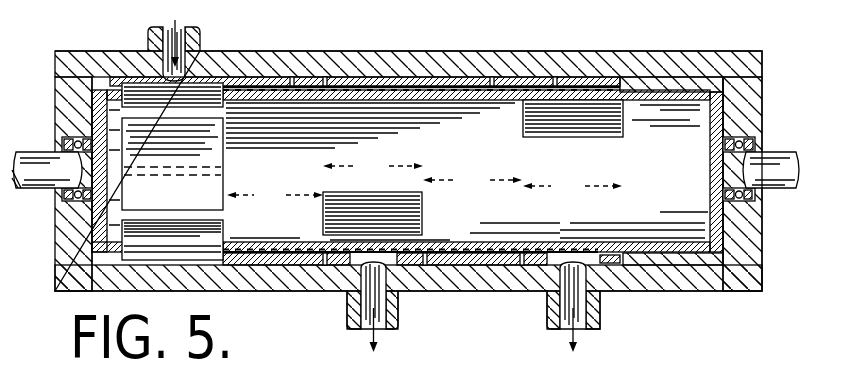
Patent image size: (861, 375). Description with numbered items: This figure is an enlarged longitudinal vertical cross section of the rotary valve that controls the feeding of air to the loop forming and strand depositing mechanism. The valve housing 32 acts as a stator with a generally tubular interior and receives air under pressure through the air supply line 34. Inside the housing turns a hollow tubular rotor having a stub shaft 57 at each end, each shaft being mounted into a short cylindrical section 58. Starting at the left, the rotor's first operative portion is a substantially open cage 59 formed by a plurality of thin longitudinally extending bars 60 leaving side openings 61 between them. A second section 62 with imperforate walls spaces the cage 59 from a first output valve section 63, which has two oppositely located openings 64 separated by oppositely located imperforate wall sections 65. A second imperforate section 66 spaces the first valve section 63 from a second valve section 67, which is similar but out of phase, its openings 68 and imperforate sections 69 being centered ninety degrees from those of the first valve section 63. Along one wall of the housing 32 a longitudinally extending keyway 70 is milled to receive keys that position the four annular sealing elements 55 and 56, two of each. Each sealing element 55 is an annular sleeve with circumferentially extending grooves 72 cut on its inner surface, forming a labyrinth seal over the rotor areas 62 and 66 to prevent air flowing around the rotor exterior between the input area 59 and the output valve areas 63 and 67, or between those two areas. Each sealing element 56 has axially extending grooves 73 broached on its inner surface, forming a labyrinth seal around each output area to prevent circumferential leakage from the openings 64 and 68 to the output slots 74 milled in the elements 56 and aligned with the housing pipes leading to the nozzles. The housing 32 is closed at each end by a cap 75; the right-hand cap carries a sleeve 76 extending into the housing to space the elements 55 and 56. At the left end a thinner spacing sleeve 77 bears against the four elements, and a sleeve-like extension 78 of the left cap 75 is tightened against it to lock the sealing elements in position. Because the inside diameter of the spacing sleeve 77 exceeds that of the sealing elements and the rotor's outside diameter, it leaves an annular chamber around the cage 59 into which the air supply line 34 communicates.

The valve housing 32 is at (573, 46).
The air supply line 34 is at (200, 44).
The annular sealing element 55 is at (276, 272).
The annular sealing element 56 is at (598, 70).
The stub shaft 57 is at (24, 151).
The short cylindrical section 58 is at (99, 70).
The cage 59 is at (133, 195).
The bar 60 is at (172, 118).
The side opening 61 is at (181, 244).
The second section 62 is at (275, 195).
The first output valve section 63 is at (373, 166).
The opening 64 is at (421, 208).
The imperforate wall section 65 is at (427, 88).
The second imperforate section 66 is at (472, 180).
The second valve section 67 is at (572, 186).
The opening 68 is at (622, 110).
The imperforate section 69 is at (602, 207).
The keyway 70 is at (216, 170).
The circumferentially extending groove 72 is at (292, 77).
The axially extending groove 73 is at (553, 90).
The output slot 74 is at (403, 293).
The cap 75 is at (55, 70).
The sleeve 76 is at (678, 273).
The spacing sleeve 77 is at (128, 268).
The sleeve-like extension 78 is at (105, 262).